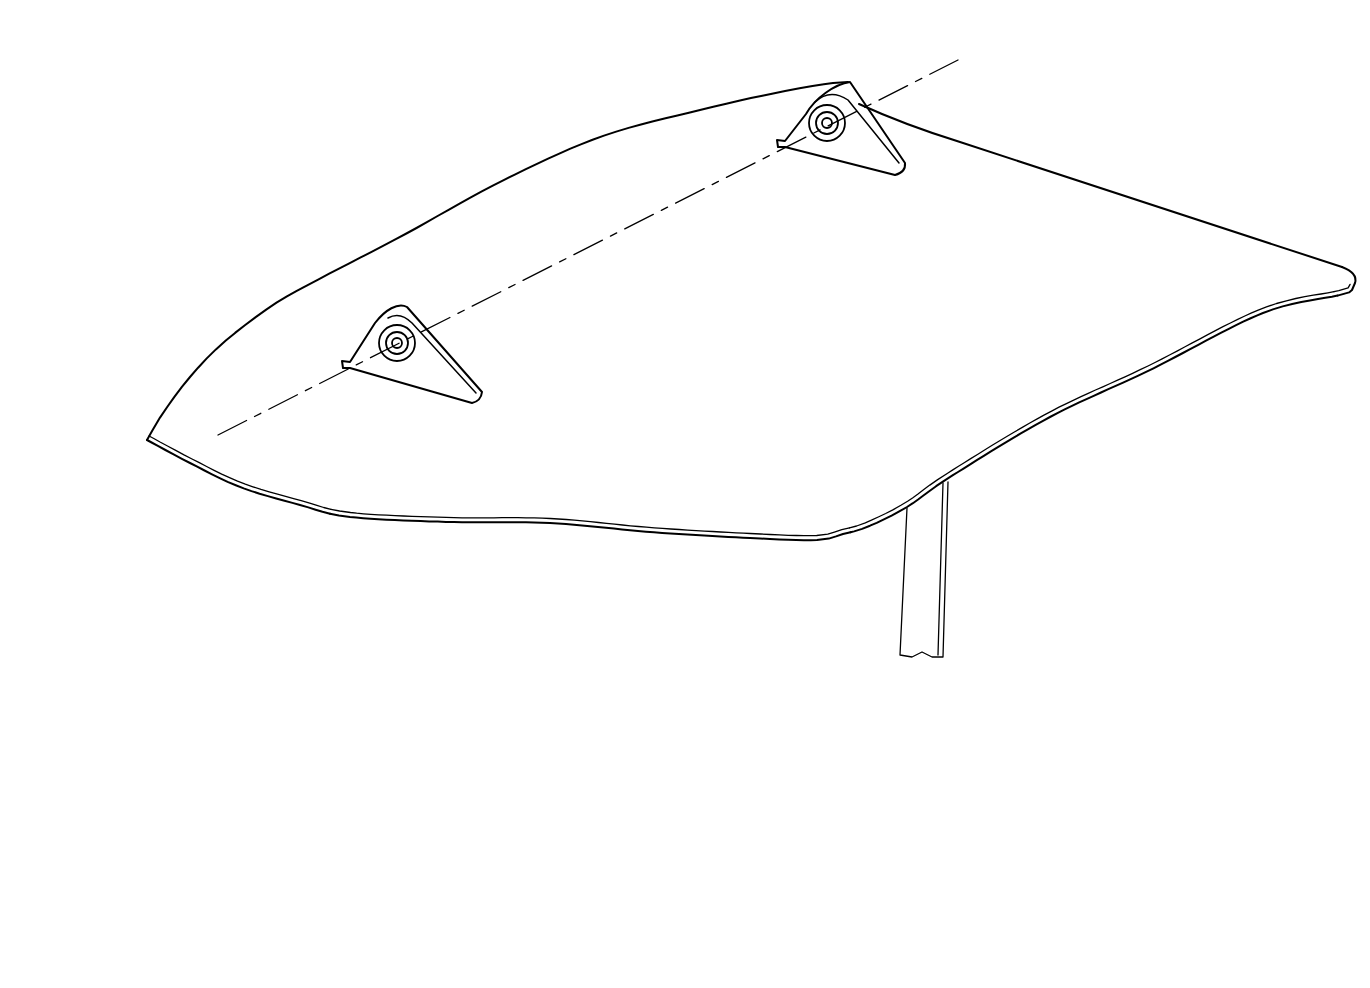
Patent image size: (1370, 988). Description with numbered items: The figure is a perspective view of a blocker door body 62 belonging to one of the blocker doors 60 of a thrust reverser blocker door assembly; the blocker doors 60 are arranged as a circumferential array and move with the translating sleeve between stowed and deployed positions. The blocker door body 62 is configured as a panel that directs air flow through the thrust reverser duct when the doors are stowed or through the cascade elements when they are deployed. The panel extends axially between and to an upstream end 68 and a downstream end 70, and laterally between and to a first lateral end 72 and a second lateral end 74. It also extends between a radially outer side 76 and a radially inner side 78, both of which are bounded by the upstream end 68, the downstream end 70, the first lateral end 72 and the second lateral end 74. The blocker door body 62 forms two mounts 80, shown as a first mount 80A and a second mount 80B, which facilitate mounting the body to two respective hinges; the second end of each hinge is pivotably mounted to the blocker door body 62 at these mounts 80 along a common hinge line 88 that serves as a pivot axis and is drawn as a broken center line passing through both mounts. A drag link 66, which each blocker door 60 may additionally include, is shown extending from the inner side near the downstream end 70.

The blocker door 60 is at (987, 81).
The blocker door body 62 is at (704, 298).
The drag link 66 is at (925, 568).
The upstream end 68 is at (435, 215).
The downstream end 70 is at (1057, 415).
The first lateral end 72 is at (542, 530).
The second lateral end 74 is at (1029, 162).
The outer side 76 is at (1248, 260).
The inner side 78 is at (441, 526).
The mount 80 is at (612, 233).
The mount 80A is at (420, 368).
The mount 80B is at (863, 155).
The hinge line 88 is at (683, 197).